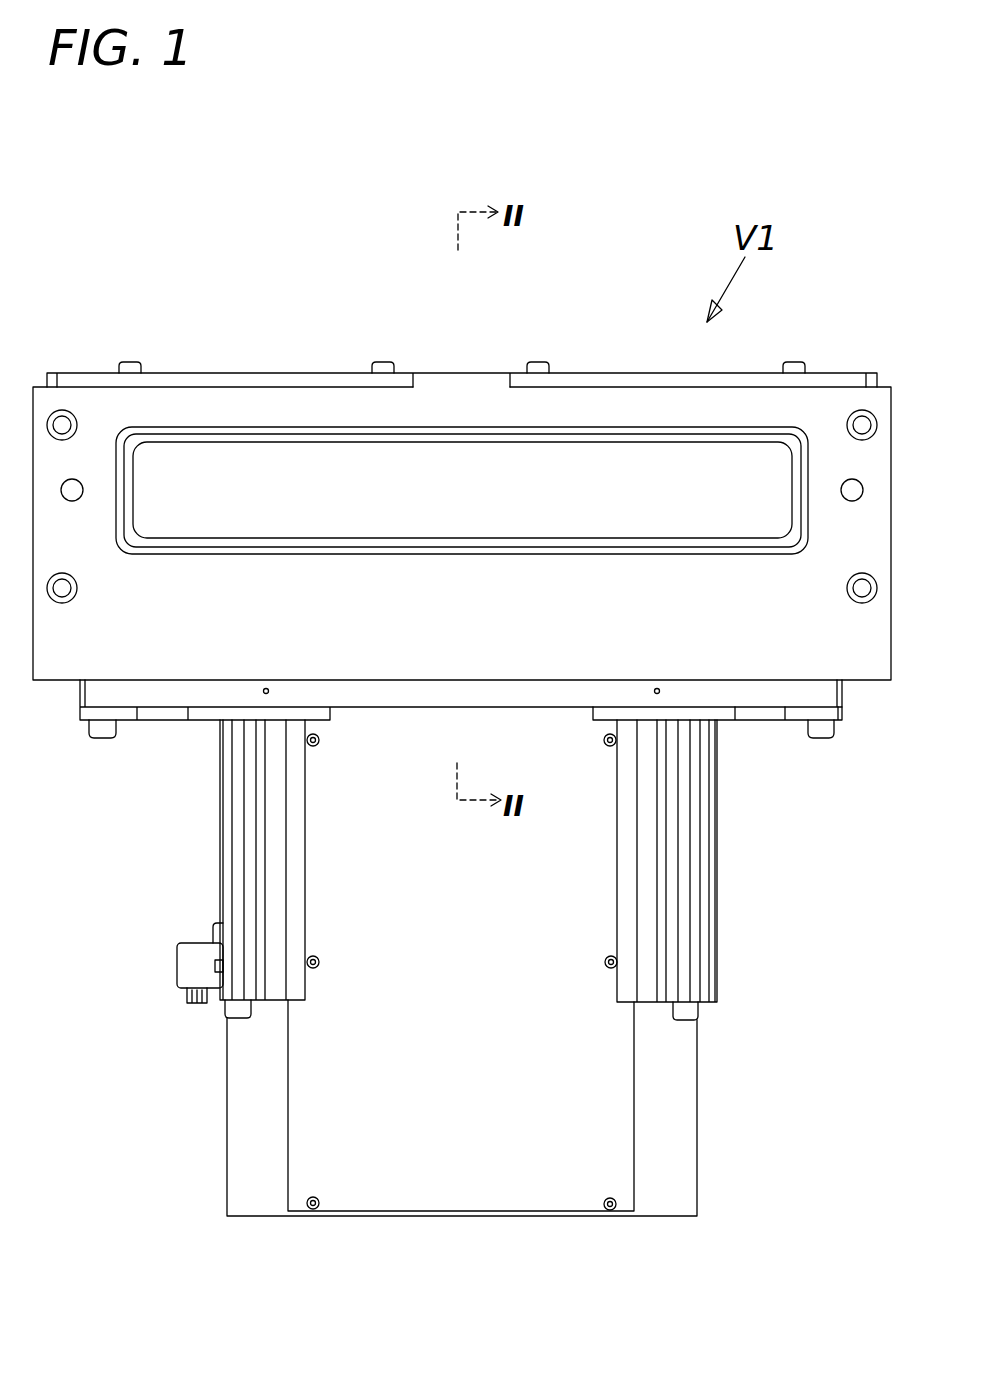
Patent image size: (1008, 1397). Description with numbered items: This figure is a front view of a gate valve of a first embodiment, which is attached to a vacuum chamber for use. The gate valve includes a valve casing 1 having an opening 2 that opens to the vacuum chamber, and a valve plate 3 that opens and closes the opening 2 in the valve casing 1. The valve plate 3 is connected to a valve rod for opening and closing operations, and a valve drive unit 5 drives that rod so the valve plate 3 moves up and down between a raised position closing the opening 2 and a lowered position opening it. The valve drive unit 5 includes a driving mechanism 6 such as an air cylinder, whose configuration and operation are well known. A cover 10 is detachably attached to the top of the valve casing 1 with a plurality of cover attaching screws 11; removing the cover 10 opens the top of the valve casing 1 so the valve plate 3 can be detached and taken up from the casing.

The valve casing 1 is at (434, 397).
The opening 2 is at (627, 453).
The valve plate 3 is at (232, 462).
The valve drive unit 5 is at (467, 948).
The driving mechanism 6 is at (242, 830).
The cover 10 is at (320, 373).
The cover attaching screws 11 is at (130, 364).